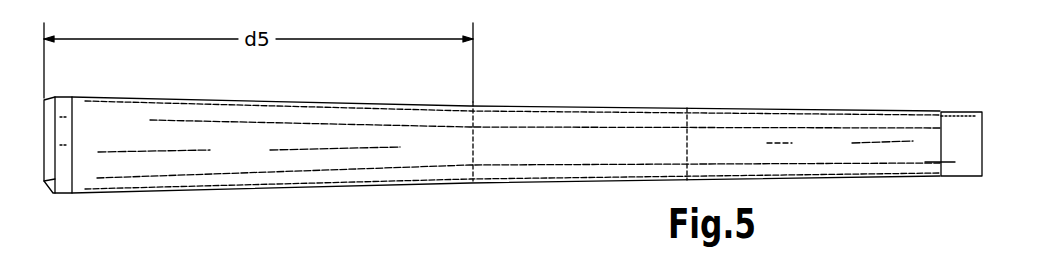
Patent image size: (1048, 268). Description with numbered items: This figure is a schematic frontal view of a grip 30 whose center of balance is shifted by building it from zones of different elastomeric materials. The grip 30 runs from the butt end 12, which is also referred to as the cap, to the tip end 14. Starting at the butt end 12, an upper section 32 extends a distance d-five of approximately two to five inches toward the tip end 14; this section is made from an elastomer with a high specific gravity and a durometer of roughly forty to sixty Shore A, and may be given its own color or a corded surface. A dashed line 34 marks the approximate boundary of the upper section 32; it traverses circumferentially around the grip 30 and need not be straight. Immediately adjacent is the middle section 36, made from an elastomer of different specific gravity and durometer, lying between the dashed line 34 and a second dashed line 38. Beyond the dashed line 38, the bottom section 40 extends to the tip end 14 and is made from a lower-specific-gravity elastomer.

The butt end 12 is at (52, 99).
The tip end 14 is at (958, 112).
The grip 30 is at (563, 82).
The upper section 32 is at (226, 151).
The dashed line 34 is at (523, 145).
The middle section 36 is at (566, 153).
The dashed line 38 is at (632, 144).
The bottom section 40 is at (831, 154).